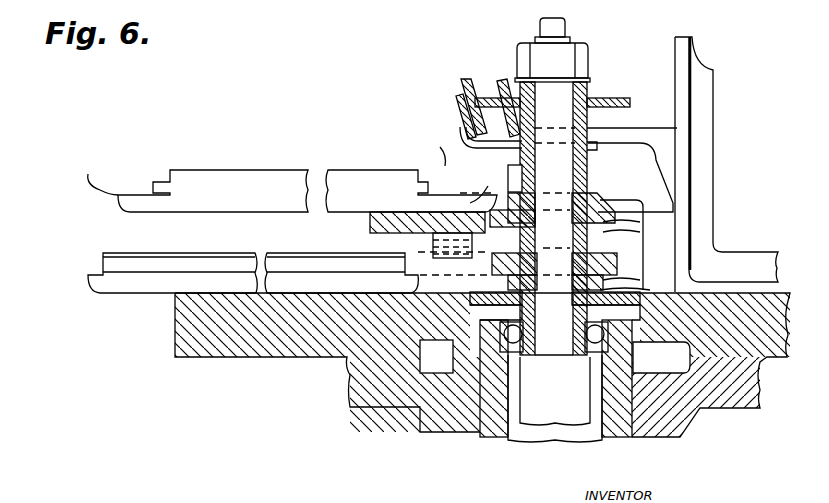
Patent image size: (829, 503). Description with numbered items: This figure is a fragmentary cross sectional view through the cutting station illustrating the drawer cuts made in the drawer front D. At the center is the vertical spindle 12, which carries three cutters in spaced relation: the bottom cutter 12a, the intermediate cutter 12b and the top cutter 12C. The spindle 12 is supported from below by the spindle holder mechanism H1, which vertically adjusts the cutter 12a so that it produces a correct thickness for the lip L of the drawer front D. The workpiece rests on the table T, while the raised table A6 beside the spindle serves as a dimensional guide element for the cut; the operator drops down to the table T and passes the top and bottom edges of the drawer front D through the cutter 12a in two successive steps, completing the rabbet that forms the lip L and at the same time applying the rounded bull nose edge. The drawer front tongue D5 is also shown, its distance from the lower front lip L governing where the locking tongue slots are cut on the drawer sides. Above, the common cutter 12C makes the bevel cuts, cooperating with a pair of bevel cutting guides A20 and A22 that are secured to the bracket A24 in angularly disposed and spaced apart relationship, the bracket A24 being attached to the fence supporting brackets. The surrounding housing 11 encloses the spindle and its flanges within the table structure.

The table T is at (280, 350).
The drawer front D is at (203, 180).
The lip L is at (286, 179).
The raised table A6 is at (380, 226).
The housing 11 is at (630, 216).
The spindle 12 is at (560, 108).
The top cutter 12C is at (605, 104).
The intermediate cutter 12b is at (590, 200).
The bottom cutter 12a is at (600, 268).
The spindle holder mechanism H1 is at (490, 435).
The bevel cutting guide A20 is at (466, 78).
The bevel cutting guide A22 is at (505, 80).
The bracket A24 is at (478, 143).
The drawer front tongue D5 is at (440, 147).